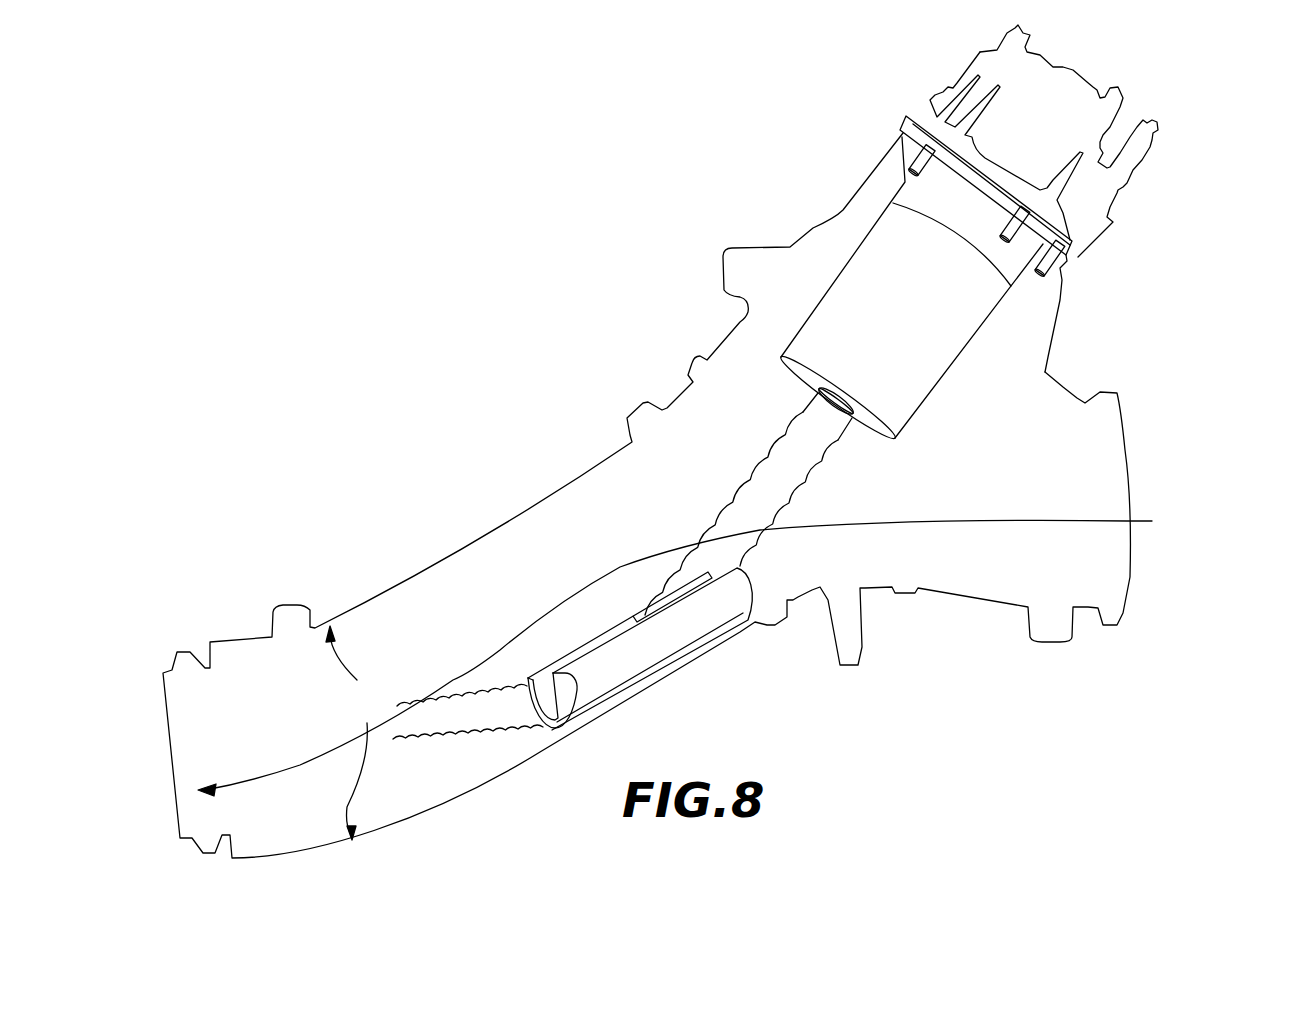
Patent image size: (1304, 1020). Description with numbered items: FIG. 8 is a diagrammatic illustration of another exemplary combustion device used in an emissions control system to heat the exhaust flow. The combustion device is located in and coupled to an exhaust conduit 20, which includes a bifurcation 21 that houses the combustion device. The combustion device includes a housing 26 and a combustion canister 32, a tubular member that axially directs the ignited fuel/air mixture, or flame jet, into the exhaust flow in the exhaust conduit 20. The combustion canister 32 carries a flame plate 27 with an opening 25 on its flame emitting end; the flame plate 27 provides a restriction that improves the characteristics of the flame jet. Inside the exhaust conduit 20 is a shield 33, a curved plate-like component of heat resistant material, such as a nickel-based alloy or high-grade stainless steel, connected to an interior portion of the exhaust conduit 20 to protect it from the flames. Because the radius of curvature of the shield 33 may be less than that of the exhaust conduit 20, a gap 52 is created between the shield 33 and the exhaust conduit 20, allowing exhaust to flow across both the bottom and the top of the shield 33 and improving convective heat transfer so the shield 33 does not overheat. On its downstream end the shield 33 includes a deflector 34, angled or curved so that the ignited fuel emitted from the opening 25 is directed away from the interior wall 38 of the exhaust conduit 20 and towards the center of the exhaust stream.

The exhaust conduit 20 is at (428, 568).
The bifurcation 21 is at (1062, 300).
The opening 25 is at (848, 392).
The housing 26 is at (1117, 208).
The flame plate 27 is at (863, 426).
The combustion canister 32 is at (962, 348).
The shield 33 is at (697, 625).
The deflector 34 is at (570, 702).
The interior wall 38 is at (355, 733).
The gap 52 is at (547, 741).